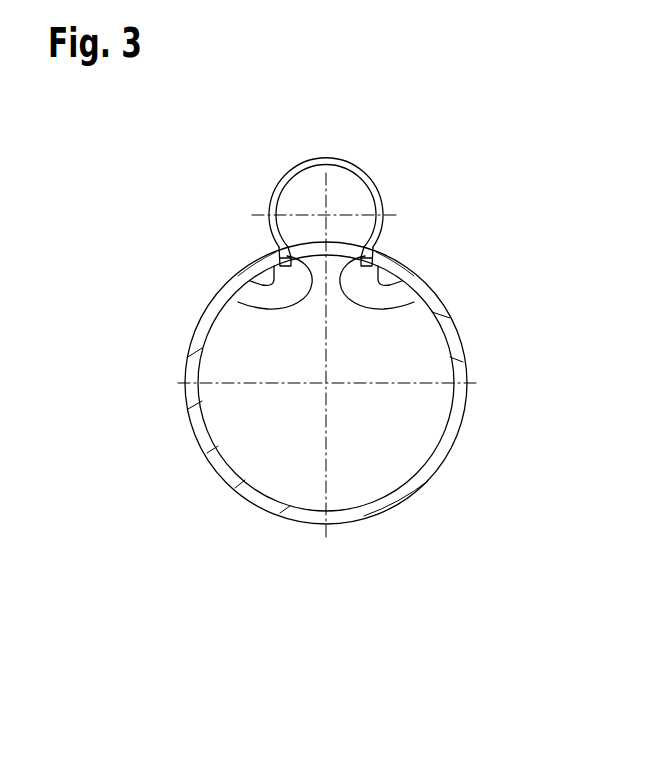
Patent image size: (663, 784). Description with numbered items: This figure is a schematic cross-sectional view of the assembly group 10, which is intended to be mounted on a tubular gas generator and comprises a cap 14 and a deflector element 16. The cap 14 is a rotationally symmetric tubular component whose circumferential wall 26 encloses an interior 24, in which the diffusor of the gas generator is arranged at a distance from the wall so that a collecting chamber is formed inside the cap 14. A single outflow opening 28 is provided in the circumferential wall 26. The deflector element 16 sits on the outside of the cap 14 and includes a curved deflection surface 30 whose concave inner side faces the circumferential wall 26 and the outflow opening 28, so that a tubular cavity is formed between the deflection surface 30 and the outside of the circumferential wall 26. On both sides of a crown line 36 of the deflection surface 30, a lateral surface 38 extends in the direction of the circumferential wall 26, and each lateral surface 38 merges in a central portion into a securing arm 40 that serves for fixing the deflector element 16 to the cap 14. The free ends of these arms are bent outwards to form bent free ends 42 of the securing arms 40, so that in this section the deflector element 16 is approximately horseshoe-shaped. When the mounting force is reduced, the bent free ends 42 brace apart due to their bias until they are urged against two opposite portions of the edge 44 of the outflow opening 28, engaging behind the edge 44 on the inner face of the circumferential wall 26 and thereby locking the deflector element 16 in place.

The assembly group 10 is at (167, 178).
The cap 14 is at (164, 417).
The deflector element 16 is at (342, 148).
The interior 24 is at (427, 405).
The circumferential wall 26 is at (190, 372).
The outflow opening 28 is at (352, 247).
The deflection surface 30 is at (284, 193).
The crown line 36 is at (326, 157).
The lateral surface 38 is at (277, 183).
The securing arm 40 is at (270, 308).
The bent free end 42 is at (268, 281).
The edge 44 is at (278, 260).